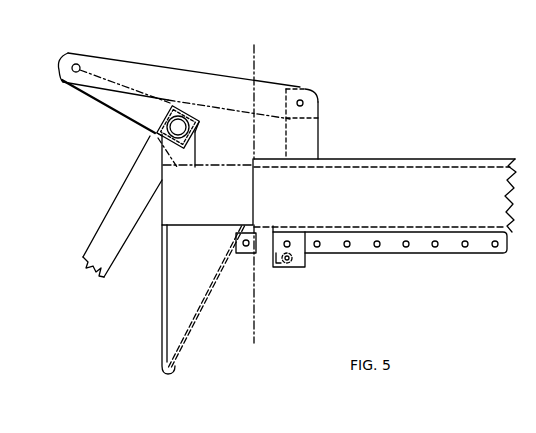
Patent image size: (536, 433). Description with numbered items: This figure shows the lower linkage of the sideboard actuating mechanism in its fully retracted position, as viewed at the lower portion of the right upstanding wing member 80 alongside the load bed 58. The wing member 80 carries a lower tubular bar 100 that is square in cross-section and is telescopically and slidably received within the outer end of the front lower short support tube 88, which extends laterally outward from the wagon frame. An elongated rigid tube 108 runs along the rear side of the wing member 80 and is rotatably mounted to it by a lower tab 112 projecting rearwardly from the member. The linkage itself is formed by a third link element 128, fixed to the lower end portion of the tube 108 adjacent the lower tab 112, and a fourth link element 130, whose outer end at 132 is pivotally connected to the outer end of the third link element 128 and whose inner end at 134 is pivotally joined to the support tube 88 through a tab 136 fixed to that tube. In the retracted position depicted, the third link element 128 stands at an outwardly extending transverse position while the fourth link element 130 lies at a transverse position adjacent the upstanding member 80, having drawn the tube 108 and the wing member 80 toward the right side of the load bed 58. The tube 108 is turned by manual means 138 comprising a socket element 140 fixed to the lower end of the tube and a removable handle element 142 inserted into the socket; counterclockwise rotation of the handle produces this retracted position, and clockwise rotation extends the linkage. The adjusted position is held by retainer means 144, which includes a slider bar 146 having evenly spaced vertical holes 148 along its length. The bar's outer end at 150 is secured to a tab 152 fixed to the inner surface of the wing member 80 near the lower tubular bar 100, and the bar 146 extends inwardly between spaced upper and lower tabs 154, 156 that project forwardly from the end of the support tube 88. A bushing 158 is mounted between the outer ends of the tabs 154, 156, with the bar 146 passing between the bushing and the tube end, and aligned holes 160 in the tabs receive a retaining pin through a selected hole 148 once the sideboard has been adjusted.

The load bed 58 is at (250, 313).
The upstanding wing member 80 is at (162, 314).
The front lower short support tube 88 is at (428, 160).
The lower tubular bar 100 is at (162, 203).
The elongated rigid tube 108 is at (146, 137).
The lower tab 112 is at (196, 157).
The third link element 128 is at (110, 107).
The fourth link element 130 is at (183, 70).
The outer end pivotal connection 132 is at (79, 64).
The inner end pivotal connection 134 is at (304, 100).
The tab 136 is at (319, 132).
The manual means 138 is at (145, 132).
The socket element 140 is at (201, 123).
The handle element 142 is at (96, 222).
The retainer means 144 is at (454, 263).
The slider bar 146 is at (505, 255).
The holes 148 is at (433, 248).
The outer end of slider bar 150 is at (243, 251).
The tab 152 is at (217, 272).
The upper tab 154 is at (303, 267).
The lower tab 156 is at (276, 265).
The bushing 158 is at (289, 264).
The holes 160 is at (290, 246).